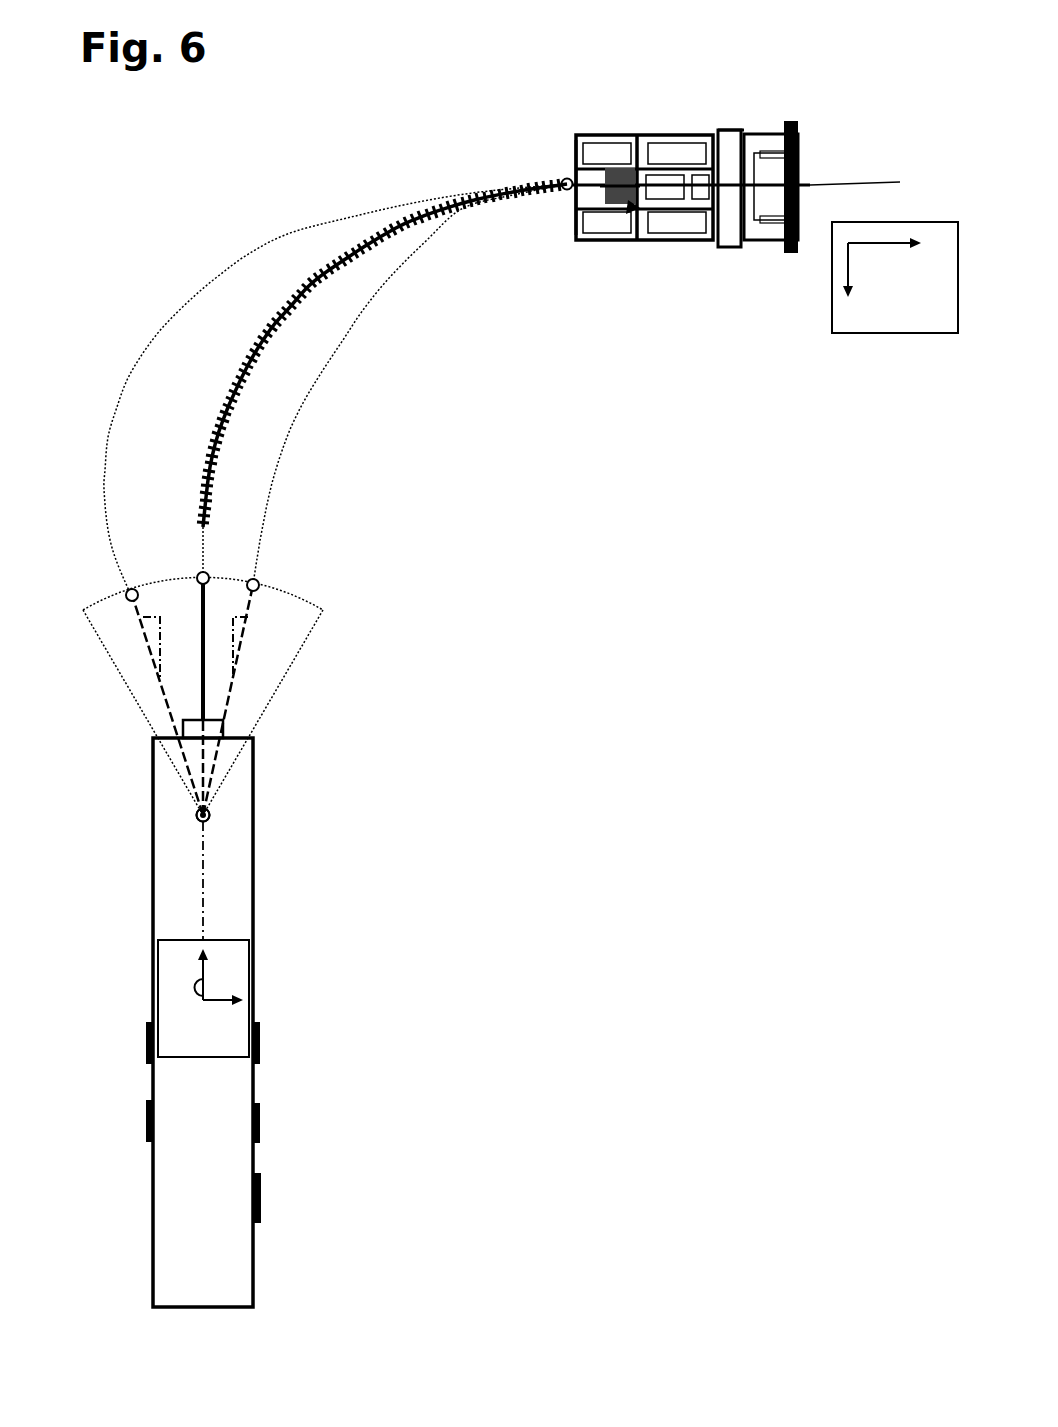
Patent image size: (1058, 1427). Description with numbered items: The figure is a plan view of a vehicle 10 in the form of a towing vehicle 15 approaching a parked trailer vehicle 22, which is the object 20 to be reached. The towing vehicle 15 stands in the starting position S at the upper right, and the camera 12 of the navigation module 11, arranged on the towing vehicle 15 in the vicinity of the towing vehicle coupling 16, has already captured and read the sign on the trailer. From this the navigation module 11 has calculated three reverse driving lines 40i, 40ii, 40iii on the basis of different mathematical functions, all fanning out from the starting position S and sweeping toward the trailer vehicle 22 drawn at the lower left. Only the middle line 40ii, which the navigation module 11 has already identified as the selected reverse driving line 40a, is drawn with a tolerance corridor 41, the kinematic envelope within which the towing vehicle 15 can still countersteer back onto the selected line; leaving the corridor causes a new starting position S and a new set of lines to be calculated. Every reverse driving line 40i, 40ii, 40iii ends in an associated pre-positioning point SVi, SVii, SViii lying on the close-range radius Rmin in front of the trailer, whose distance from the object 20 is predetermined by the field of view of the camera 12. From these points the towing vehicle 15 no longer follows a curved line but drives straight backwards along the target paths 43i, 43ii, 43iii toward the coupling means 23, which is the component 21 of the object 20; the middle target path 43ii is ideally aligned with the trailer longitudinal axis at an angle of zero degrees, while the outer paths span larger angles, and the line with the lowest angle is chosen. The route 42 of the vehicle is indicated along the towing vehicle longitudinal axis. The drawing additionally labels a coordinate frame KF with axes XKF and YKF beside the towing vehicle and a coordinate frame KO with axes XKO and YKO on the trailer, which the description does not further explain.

The vehicle 10 is at (800, 102).
The navigation module 11 is at (548, 160).
The camera 12 is at (594, 170).
The towing vehicle 15 is at (743, 133).
The towing vehicle coupling 16 is at (615, 168).
The object 20 is at (297, 905).
The component 21 is at (210, 813).
The trailer vehicle 22 is at (254, 1240).
The coupling means 23 is at (203, 815).
The reverse driving line 40i is at (292, 237).
The reverse driving line 40ii is at (243, 380).
The reverse driving line 40iii is at (388, 279).
The selected reverse driving line 40a is at (205, 533).
The tolerance corridor 41 is at (308, 282).
The route 42 is at (860, 185).
The target path 43i is at (172, 712).
The target path 43ii is at (197, 580).
The target path 43iii is at (232, 700).
The starting position S is at (572, 190).
The pre-positioning point SVi is at (126, 594).
The pre-positioning point SVii is at (208, 577).
The pre-positioning point SViii is at (258, 584).
The close-range radius Rmin is at (313, 633).
The vehicle coordinate system KF is at (852, 334).
The vehicle x axis XKF is at (923, 265).
The vehicle y axis YKF is at (877, 299).
The trailer coordinate system KO is at (179, 1066).
The trailer x axis XKO is at (202, 970).
The trailer y axis YKO is at (225, 1008).